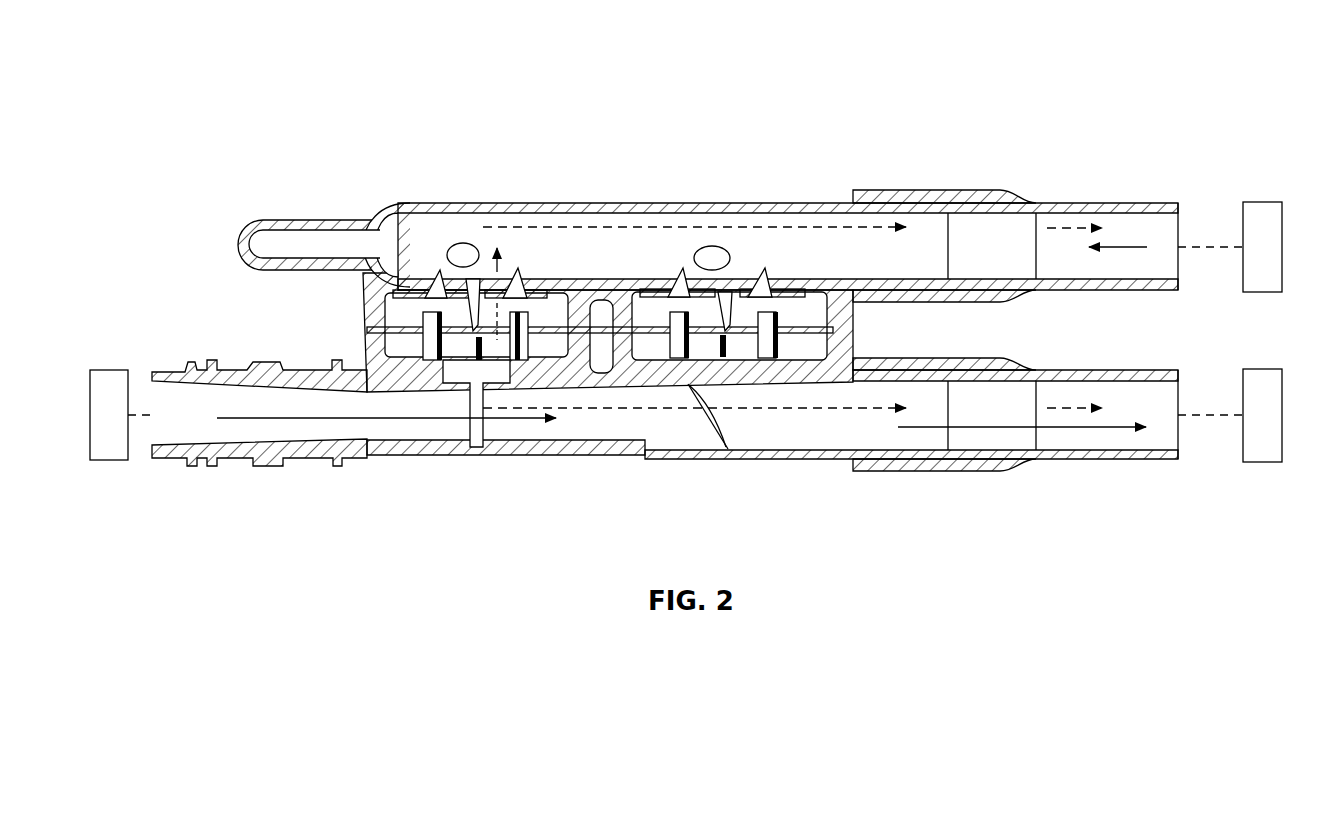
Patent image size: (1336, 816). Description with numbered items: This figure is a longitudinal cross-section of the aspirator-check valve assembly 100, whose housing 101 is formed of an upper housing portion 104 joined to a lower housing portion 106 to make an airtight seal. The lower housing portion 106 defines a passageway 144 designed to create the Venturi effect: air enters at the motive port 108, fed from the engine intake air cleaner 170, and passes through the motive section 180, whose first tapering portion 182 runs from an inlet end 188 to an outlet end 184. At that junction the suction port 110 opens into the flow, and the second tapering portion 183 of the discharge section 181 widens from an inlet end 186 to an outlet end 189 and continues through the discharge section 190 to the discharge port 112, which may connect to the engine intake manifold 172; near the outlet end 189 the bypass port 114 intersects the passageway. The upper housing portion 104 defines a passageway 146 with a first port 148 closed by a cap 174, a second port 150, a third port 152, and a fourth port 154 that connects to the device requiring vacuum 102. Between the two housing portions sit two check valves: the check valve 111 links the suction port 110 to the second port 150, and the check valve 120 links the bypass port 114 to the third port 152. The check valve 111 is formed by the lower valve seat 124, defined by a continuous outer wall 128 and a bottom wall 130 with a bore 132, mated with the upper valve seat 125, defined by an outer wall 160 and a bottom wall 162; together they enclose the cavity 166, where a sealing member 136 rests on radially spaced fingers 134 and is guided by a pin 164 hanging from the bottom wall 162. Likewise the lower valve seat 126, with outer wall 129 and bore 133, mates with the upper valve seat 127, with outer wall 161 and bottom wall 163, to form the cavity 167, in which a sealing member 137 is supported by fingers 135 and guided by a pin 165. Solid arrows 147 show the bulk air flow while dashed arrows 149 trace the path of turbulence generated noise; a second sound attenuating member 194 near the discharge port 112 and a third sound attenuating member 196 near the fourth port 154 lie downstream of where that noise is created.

The aspirator-check valve assembly 100 is at (311, 92).
The housing 101 is at (380, 215).
The device requiring vacuum 102 is at (1263, 203).
The upper housing portion 104 is at (668, 203).
The lower housing portion 106 is at (365, 456).
The motive port 108 is at (150, 378).
The suction port 110 is at (395, 394).
The check valve 111 is at (527, 262).
The discharge port 112 is at (990, 470).
The bypass port 114 is at (700, 392).
The check valve 120 is at (808, 238).
The lower valve seat 124 is at (377, 360).
The upper valve seat 125 is at (625, 283).
The lower valve seat 126 is at (868, 372).
The upper valve seat 127 is at (828, 300).
The continuous outer wall 128 is at (560, 393).
The continuous outer wall 129 is at (768, 372).
The bottom wall 130 is at (466, 400).
The bore 132 is at (505, 388).
The bore 133 is at (757, 412).
The radially spaced fingers 134 is at (400, 326).
The radially spaced fingers 135 is at (805, 300).
The sealing member 136 is at (420, 292).
The sealing member 137 is at (685, 278).
The passageway 144 is at (445, 385).
The passageway 146 is at (672, 268).
The solid arrows 147 is at (737, 354).
The first port 148 is at (262, 243).
The dashed arrows 149 is at (640, 226).
The second port 150 is at (455, 364).
The third port 152 is at (727, 292).
The fourth port 154 is at (950, 195).
The continuous outer wall 160 is at (392, 302).
The continuous outer wall 161 is at (850, 325).
The bottom wall 162 is at (475, 290).
The bottom wall 163 is at (767, 270).
The pin 164 is at (440, 272).
The pin 165 is at (752, 376).
The cavity 166 is at (549, 312).
The cavity 167 is at (835, 376).
The engine intake air cleaner 170 is at (120, 461).
The engine intake manifold 172 is at (1265, 462).
The cap 174 is at (295, 217).
The motive section 180 is at (242, 370).
The discharge section 181 is at (642, 448).
The first tapering portion 182 is at (242, 437).
The second tapering portion 183 is at (668, 432).
The outlet end 184 is at (481, 445).
The inlet end 186 is at (520, 430).
The inlet end 188 is at (190, 420).
The outlet end 189 is at (700, 442).
The discharge section 190 is at (842, 462).
The second sound attenuating member 194 is at (1017, 440).
The third sound attenuating member 196 is at (1015, 220).